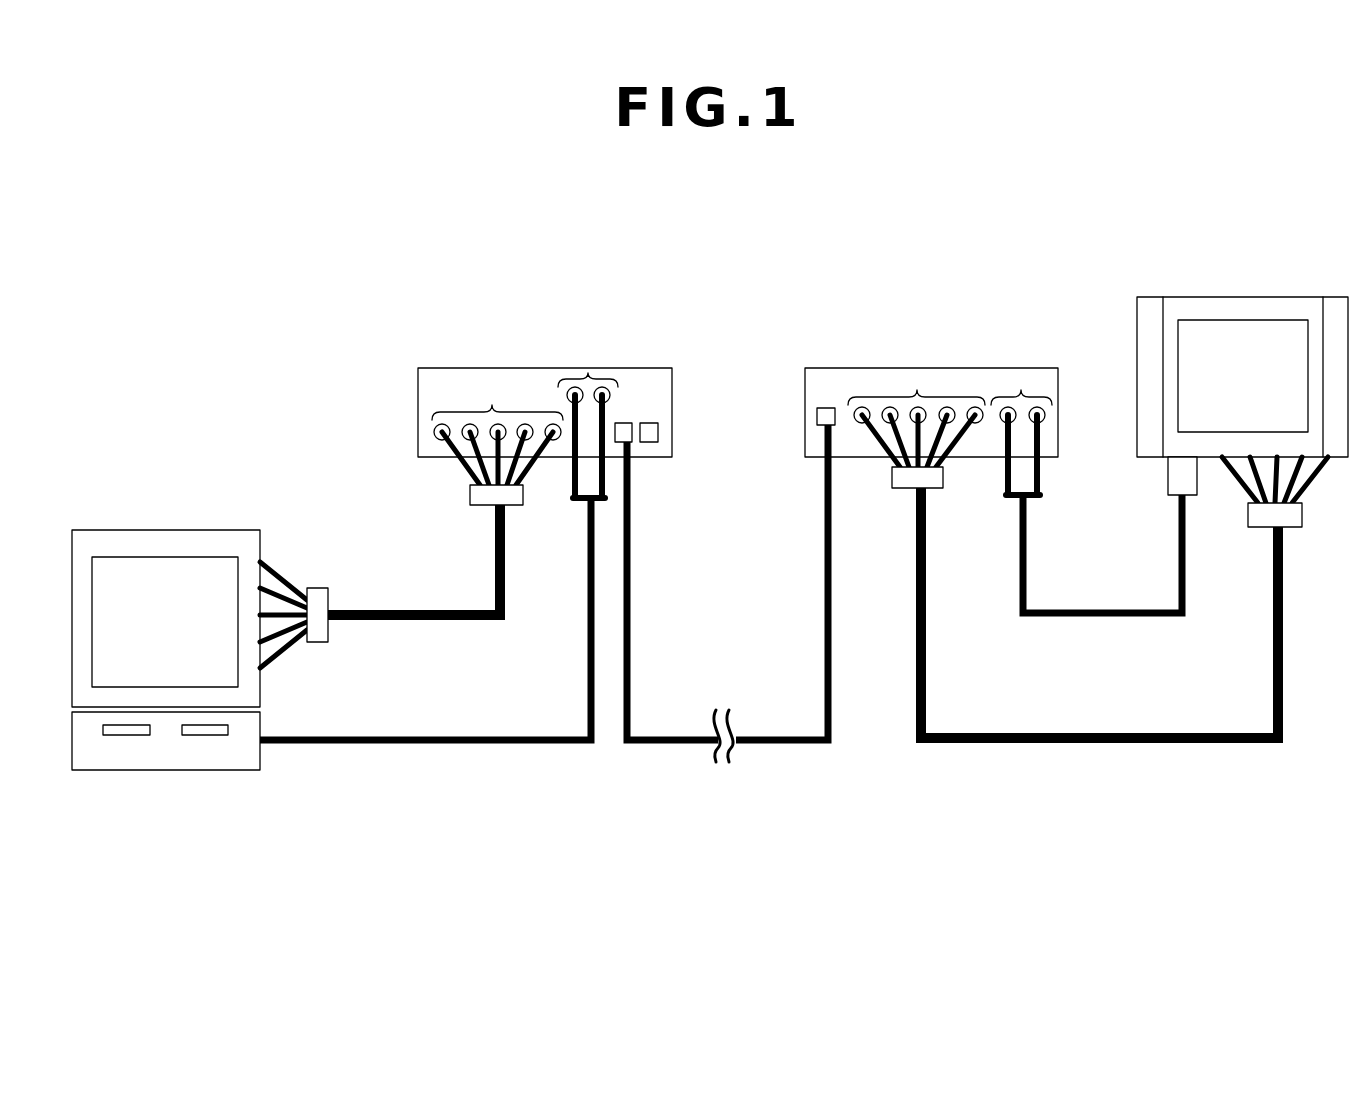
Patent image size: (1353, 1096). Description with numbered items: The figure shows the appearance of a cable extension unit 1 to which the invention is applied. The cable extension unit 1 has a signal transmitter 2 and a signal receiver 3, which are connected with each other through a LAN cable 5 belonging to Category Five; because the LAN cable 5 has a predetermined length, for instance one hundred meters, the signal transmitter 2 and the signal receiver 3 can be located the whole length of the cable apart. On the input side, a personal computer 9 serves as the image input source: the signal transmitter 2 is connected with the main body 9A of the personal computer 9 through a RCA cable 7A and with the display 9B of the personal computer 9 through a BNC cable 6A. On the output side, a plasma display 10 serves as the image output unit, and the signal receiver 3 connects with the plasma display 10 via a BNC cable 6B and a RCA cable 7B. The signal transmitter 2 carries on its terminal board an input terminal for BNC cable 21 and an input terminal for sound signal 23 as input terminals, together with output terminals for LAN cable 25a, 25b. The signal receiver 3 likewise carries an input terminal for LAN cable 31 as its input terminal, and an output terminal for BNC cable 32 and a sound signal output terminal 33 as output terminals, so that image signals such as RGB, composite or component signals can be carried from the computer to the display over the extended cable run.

The cable extension unit 1 is at (726, 240).
The signal transmitter 2 is at (538, 317).
The signal receiver 3 is at (937, 322).
The LAN cable 5 is at (760, 743).
The BNC cable 6A is at (413, 608).
The BNC cable 6B is at (1118, 743).
The RCA cable 7A is at (423, 745).
The RCA cable 7B is at (1110, 610).
The personal computer 9 is at (167, 518).
The main body 9A is at (215, 770).
The display 9B is at (235, 530).
The plasma display 10 is at (1243, 295).
The input terminal for BNC cable 21 is at (492, 395).
The input terminal for sound signal 23 is at (588, 374).
The output terminal for LAN cable 25a is at (625, 423).
The output terminal for LAN cable 25b is at (650, 423).
The input terminal for LAN cable 31 is at (826, 408).
The output terminal for BNC cable 32 is at (917, 390).
The sound signal output terminal 33 is at (1021, 391).